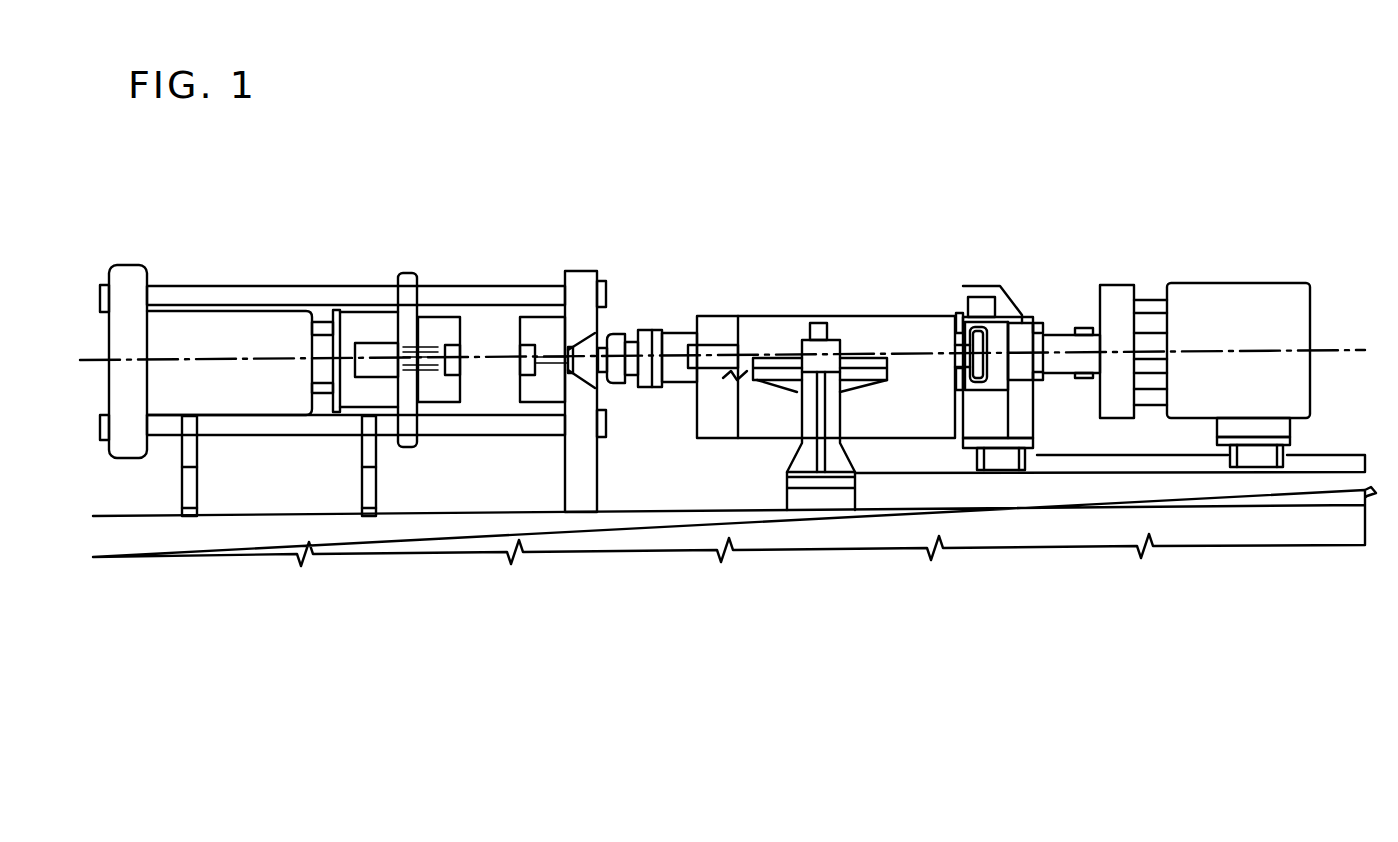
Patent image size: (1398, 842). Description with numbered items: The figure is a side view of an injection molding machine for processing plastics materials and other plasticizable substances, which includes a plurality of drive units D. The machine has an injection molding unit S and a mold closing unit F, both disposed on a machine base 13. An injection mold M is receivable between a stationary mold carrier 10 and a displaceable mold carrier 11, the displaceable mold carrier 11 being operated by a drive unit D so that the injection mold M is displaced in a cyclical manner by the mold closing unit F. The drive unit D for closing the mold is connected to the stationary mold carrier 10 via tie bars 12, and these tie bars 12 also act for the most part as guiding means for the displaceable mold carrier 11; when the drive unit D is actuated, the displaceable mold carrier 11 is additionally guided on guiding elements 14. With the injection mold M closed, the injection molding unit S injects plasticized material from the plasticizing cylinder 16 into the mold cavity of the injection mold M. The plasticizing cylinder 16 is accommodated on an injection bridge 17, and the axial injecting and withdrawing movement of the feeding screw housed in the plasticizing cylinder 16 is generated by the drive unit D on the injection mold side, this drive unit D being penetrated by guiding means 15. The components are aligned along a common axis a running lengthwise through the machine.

The drive unit D is at (187, 326).
The tie bars 12 is at (238, 297).
The mold closing unit F is at (302, 246).
The injection mold M is at (538, 323).
The stationary mold carrier 10 is at (578, 285).
The plasticizing cylinder 16 is at (678, 330).
The injection molding unit S is at (870, 293).
The guiding means 15 is at (1150, 305).
The injection bridge 17 is at (1005, 420).
The guiding elements 14 is at (325, 392).
The displaceable mold carrier 11 is at (407, 437).
The machine base 13 is at (635, 540).
The axis a is at (723, 355).